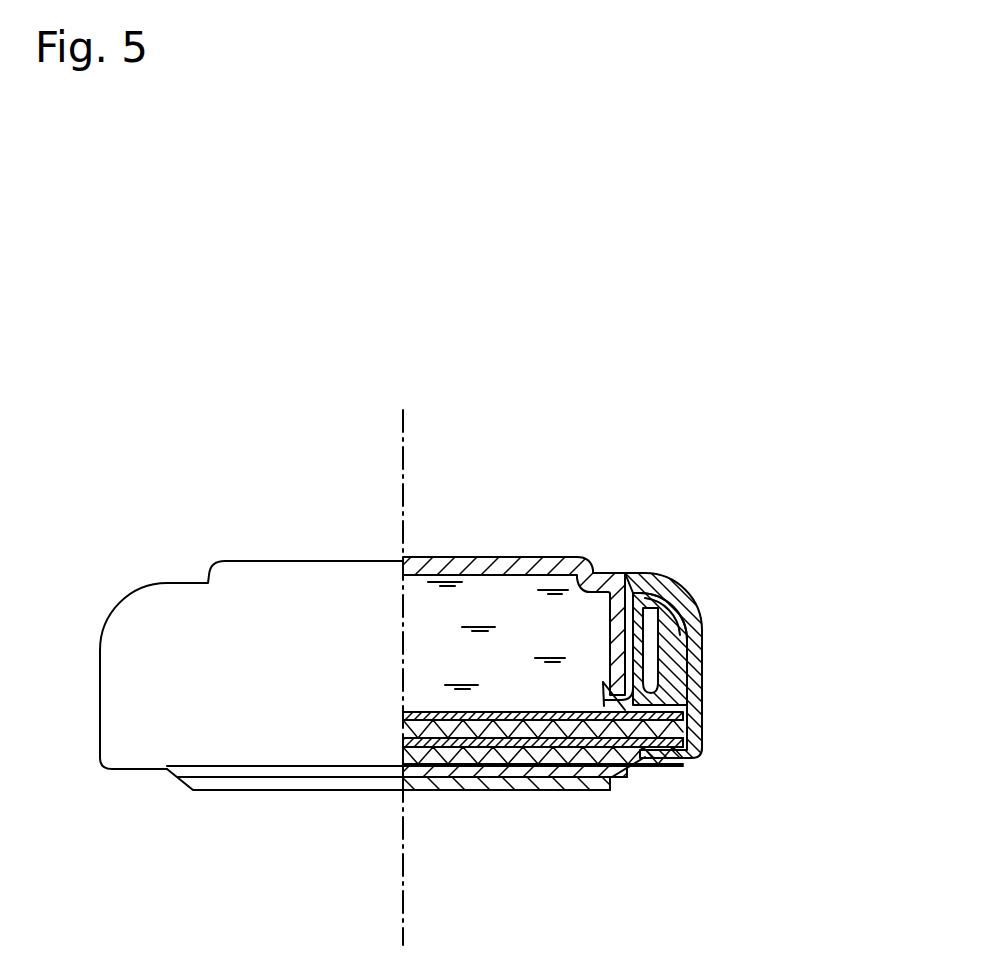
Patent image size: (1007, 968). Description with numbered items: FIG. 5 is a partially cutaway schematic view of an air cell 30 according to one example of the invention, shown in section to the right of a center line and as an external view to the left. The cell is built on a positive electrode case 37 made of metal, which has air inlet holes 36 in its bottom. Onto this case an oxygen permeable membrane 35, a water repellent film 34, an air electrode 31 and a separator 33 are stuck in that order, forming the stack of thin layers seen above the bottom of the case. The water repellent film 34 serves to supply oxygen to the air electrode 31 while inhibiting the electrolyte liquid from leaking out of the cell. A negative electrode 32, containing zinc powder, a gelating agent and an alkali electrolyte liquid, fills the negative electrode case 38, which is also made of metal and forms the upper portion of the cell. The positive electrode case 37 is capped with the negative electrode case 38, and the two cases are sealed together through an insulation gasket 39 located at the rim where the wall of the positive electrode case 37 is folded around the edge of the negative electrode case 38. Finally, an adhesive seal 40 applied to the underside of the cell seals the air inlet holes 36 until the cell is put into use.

The flat battery 30 is at (280, 515).
The air electrode 31 is at (703, 732).
The negative electrode 32 is at (517, 610).
The separator 33 is at (703, 700).
The water repellent film 34 is at (670, 763).
The oxygen permeable membrane 35 is at (597, 783).
The air inlet holes 36 is at (510, 768).
The positive electrode case 37 is at (700, 663).
The negative electrode case 38 is at (498, 563).
The insulation gasket 39 is at (700, 602).
The adhesive seal 40 is at (303, 797).